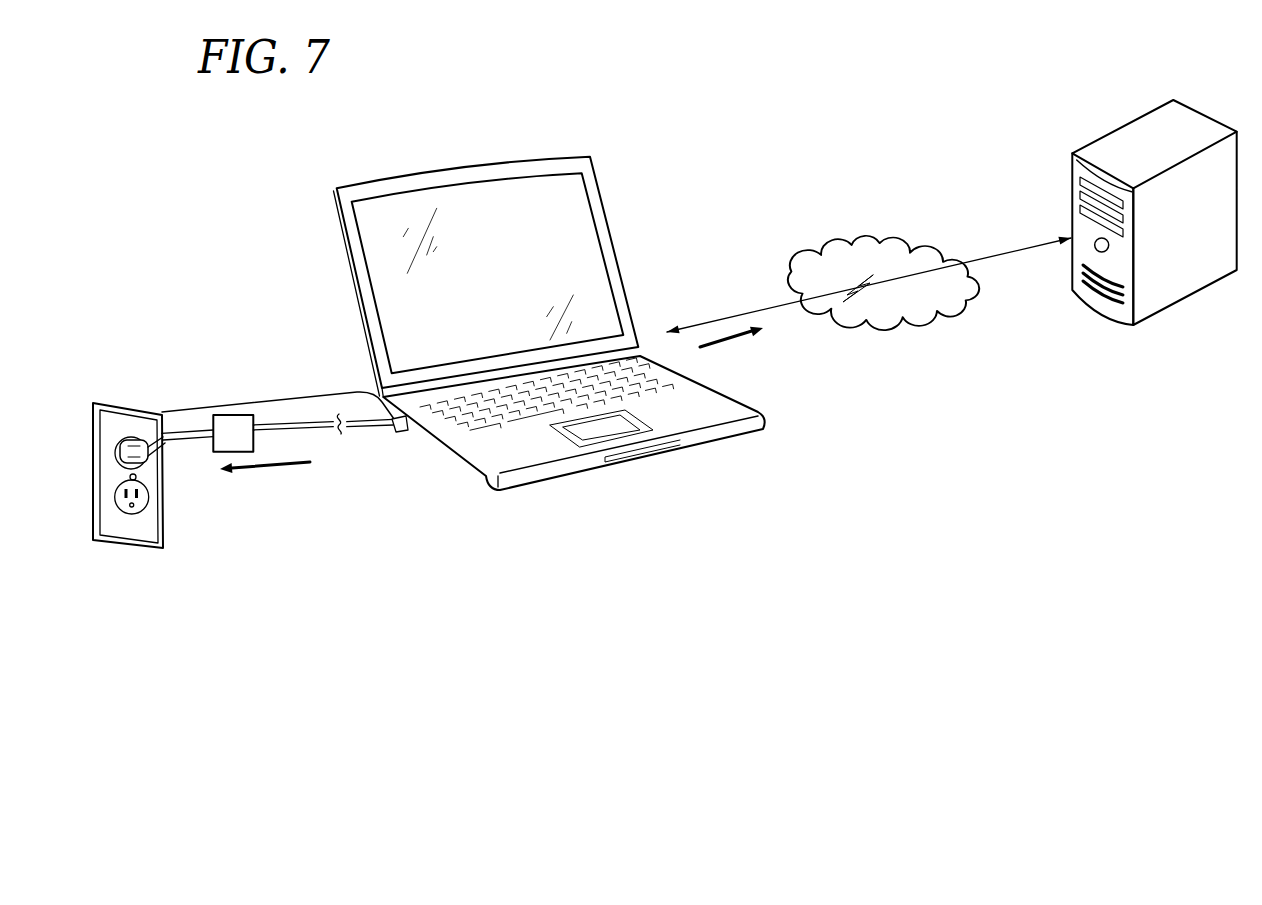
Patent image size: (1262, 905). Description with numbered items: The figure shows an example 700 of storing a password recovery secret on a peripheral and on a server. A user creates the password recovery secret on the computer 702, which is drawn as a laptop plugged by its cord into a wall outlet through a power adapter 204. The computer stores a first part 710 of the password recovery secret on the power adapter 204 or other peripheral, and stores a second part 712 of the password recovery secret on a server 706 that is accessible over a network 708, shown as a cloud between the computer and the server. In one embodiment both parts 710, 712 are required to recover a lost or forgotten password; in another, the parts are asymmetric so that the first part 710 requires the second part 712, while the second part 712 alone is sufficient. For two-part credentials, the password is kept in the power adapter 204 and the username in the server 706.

The example of storing a password recovery secret 700 is at (680, 176).
The computer 702 is at (346, 228).
The power adapter 204 is at (233, 404).
The server 706 is at (1122, 126).
The network 708 is at (885, 232).
The first part of the password recovery secret 710 is at (325, 540).
The second part of the password recovery secret 712 is at (840, 407).